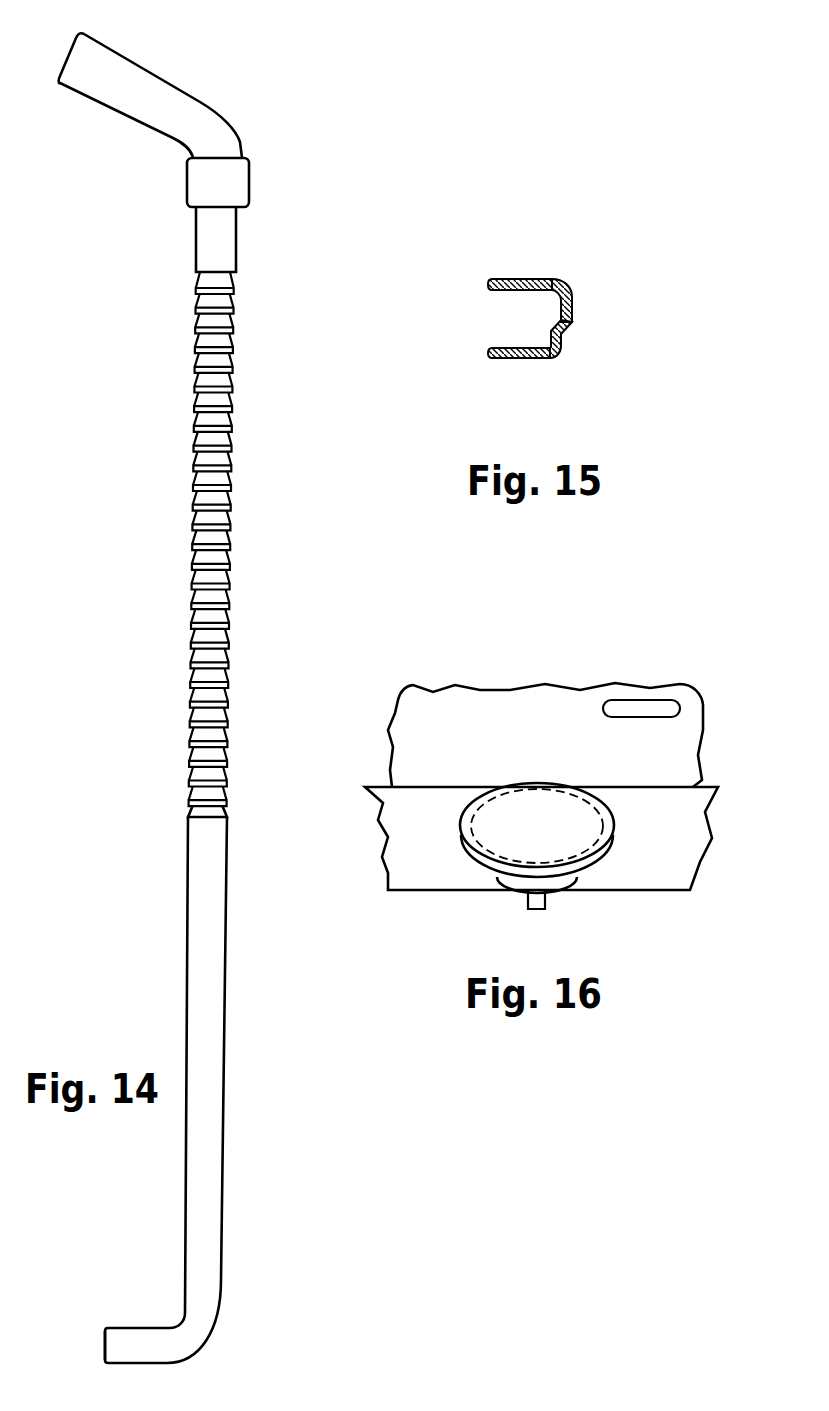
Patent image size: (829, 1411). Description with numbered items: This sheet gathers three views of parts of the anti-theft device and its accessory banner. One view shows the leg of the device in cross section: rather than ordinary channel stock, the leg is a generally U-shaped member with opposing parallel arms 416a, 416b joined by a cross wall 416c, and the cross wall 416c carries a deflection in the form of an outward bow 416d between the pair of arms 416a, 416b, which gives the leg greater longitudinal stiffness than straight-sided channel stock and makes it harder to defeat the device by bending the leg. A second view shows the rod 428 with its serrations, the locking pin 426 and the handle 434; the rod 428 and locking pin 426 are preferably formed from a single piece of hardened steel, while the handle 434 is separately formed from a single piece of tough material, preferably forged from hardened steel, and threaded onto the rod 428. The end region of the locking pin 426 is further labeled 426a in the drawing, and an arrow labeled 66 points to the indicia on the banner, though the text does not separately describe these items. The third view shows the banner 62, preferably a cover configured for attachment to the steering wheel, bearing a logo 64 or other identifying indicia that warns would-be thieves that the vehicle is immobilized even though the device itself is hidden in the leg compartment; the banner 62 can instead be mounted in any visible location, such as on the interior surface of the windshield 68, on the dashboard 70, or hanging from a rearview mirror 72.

In FIG. 14, the handle 434 is at (207, 132).
In FIG. 14, the rod 428 is at (225, 242).
In FIG. 14, the locking pin 426 is at (163, 1353).
In FIG. 14, the end opening 426a is at (128, 1328).
In FIG. 15, the arm 416a is at (522, 358).
In FIG. 15, the arm 416b is at (523, 283).
In FIG. 15, the cross wall 416c is at (567, 340).
In FIG. 15, the outward bow 416d is at (572, 313).
In FIG. 16, the banner 62 is at (558, 785).
In FIG. 16, the logo 64 is at (555, 862).
In FIG. 16, the protected indicia 66 is at (480, 803).
In FIG. 16, the windshield 68 is at (537, 732).
In FIG. 16, the dashboard 70 is at (437, 828).
In FIG. 16, the rearview mirror 72 is at (650, 713).